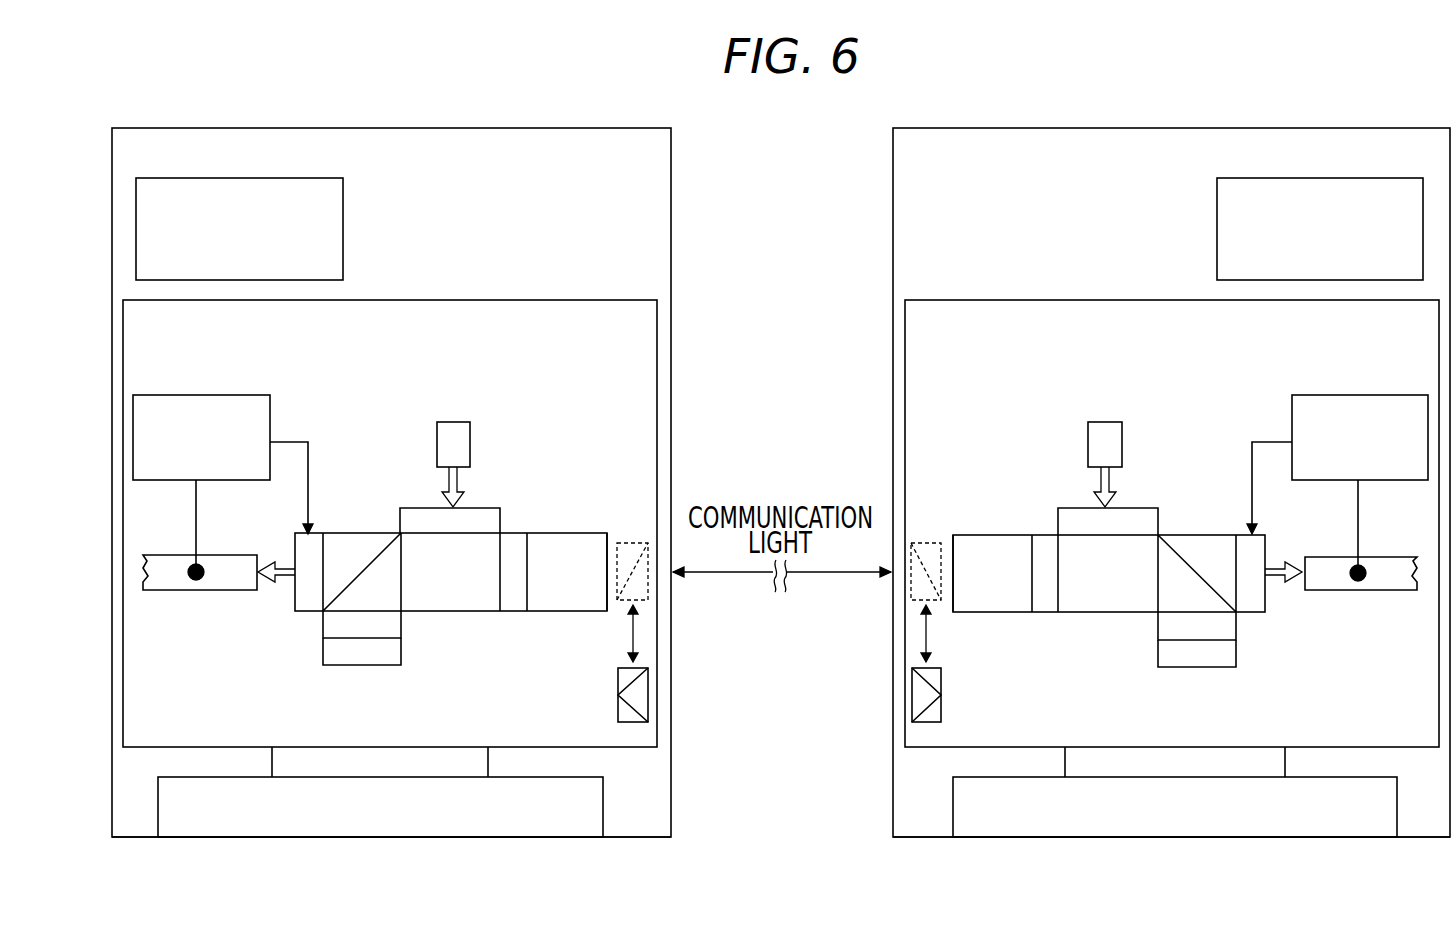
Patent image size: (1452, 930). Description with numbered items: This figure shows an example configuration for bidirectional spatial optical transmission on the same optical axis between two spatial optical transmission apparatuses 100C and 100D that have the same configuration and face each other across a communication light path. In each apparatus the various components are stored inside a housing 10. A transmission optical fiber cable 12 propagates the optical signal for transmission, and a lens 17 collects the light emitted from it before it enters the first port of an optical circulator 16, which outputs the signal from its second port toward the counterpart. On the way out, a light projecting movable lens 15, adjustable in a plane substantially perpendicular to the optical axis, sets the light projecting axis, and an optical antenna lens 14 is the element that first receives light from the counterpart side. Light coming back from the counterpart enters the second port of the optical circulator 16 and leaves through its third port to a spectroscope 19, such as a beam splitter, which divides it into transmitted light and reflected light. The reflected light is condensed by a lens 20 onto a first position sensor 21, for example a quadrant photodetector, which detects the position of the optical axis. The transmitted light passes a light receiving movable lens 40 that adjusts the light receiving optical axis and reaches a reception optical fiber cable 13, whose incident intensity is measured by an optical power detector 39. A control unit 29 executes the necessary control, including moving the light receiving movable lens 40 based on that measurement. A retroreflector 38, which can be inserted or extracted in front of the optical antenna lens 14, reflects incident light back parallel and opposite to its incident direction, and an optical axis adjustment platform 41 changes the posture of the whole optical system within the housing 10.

The housing 10 is at (142, 837).
The transmission optical fiber cable 12 is at (452, 420).
The reception optical fiber cable 13 is at (170, 555).
The optical antenna lens 14 is at (572, 533).
The light projecting movable lens 15 is at (516, 533).
The optical circulator 16 is at (477, 612).
The lens 17 is at (500, 508).
The spectroscope 19 is at (351, 533).
The lens 20 is at (403, 628).
The first position sensor 21 is at (403, 652).
The control unit 29 is at (344, 228).
The retroreflector 38 is at (633, 722).
The optical power detector 39 is at (196, 395).
The light receiving movable lens 40 is at (311, 612).
The optical axis adjustment platform 41 is at (498, 828).
The spatial optical transmission apparatus 100C is at (391, 463).
The spatial optical transmission apparatus 100D is at (1172, 463).